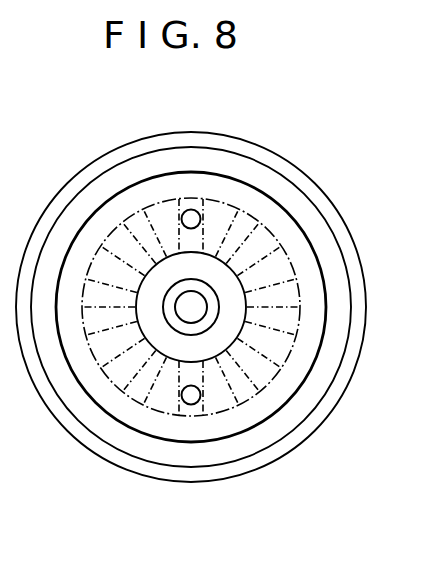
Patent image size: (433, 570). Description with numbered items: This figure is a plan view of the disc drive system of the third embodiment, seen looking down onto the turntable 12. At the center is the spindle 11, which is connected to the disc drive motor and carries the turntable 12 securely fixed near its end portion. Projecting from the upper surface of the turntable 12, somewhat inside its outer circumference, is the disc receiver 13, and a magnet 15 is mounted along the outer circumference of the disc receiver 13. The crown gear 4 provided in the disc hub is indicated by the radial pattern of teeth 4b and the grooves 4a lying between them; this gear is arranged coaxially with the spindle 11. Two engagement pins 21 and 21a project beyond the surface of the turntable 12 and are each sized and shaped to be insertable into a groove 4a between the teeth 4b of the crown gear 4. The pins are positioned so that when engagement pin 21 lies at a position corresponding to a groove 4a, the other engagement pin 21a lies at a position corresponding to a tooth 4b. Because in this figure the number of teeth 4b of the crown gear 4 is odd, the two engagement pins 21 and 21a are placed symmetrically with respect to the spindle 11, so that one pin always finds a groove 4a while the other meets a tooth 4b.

The crown gear 4 is at (240, 410).
The grooves 4a is at (227, 205).
The teeth 4b is at (160, 205).
The spindle 11 is at (210, 291).
The turntable 12 is at (312, 184).
The disc receiver 13 is at (275, 187).
The magnet 15 is at (95, 168).
The engagement pin 21 is at (191, 209).
The engagement pin 21a is at (199, 404).